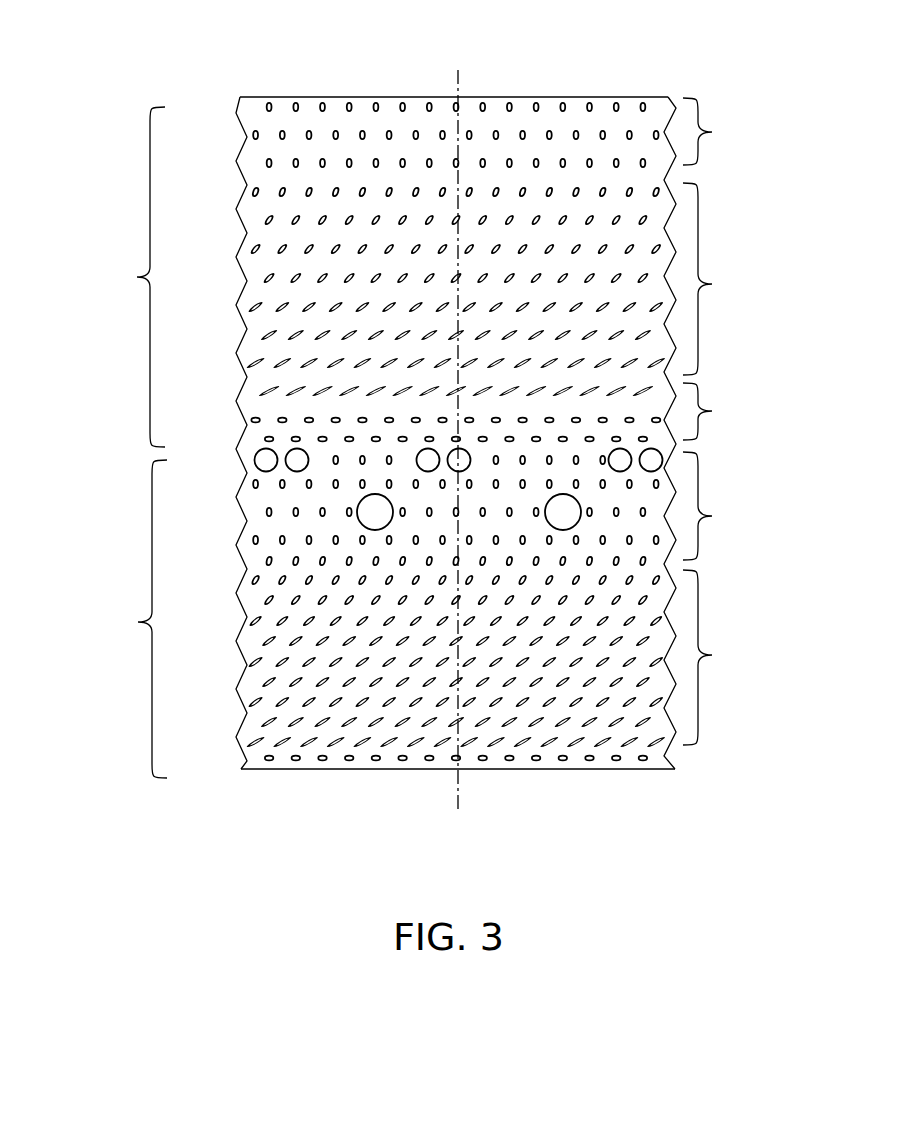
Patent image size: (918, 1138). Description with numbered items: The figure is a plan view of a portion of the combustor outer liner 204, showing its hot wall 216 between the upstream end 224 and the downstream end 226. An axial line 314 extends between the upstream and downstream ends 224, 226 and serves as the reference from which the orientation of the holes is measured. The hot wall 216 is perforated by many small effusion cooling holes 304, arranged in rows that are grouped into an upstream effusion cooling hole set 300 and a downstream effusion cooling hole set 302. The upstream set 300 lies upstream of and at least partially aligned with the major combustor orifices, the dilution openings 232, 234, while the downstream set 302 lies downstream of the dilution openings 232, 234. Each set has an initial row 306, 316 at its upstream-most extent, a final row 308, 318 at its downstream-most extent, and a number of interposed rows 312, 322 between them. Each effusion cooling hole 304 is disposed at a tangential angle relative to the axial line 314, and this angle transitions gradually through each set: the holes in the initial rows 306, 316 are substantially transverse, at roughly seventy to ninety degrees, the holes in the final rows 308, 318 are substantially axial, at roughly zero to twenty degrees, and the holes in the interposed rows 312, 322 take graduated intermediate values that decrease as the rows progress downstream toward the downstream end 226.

The outer liner 204 is at (130, 105).
The hot wall 216 is at (548, 122).
The upstream end 224 is at (344, 769).
The downstream end 226 is at (425, 97).
The dilution opening 232 is at (357, 512).
The dilution opening 234 is at (256, 461).
The upstream effusion cooling hole set 300 is at (422, 632).
The downstream effusion cooling hole set 302 is at (423, 246).
The effusion cooling hole 304 is at (268, 763).
The initial row 306 is at (656, 758).
The final row 308 is at (472, 508).
The interposed rows 312 is at (497, 686).
The axial line 314 is at (458, 797).
The initial row 316 is at (507, 412).
The final row 318 is at (508, 106).
The interposed rows 322 is at (504, 289).